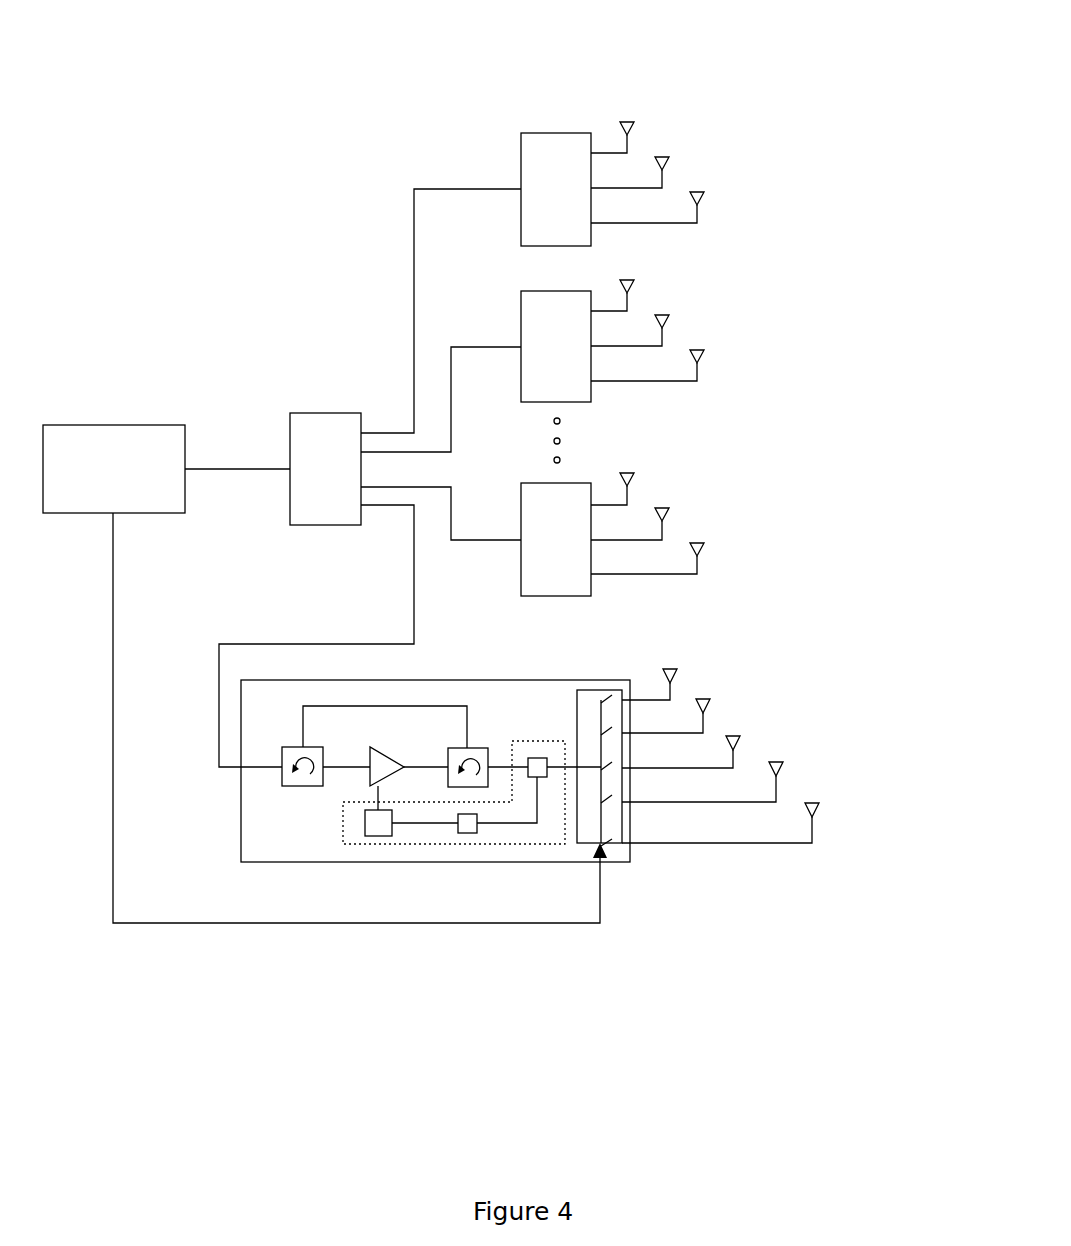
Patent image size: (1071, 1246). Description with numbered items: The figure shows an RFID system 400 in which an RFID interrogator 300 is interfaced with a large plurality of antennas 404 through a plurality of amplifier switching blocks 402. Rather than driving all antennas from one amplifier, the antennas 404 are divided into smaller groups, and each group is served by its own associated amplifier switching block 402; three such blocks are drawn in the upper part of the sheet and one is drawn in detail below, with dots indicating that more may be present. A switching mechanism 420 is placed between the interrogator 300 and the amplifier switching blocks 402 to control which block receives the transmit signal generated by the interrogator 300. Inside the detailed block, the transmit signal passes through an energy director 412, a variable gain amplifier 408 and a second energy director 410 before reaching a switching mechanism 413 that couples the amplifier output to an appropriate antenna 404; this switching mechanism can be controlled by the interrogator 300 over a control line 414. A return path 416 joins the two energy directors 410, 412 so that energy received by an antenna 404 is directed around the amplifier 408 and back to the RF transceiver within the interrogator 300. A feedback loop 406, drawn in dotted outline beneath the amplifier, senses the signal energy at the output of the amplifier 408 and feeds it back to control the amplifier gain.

The RFID interrogator 300 is at (63, 425).
The RFID system 400 is at (828, 38).
The amplifier switching block 402 is at (520, 226).
The antenna 404 is at (631, 121).
The feedback loop 406 is at (343, 820).
The variable gain amplifier 408 is at (378, 750).
The energy director 410 is at (479, 748).
The energy director 412 is at (324, 752).
The switch 413 is at (596, 690).
The control line 414 is at (114, 590).
The return path 416 is at (302, 720).
The splitter 420 is at (325, 527).